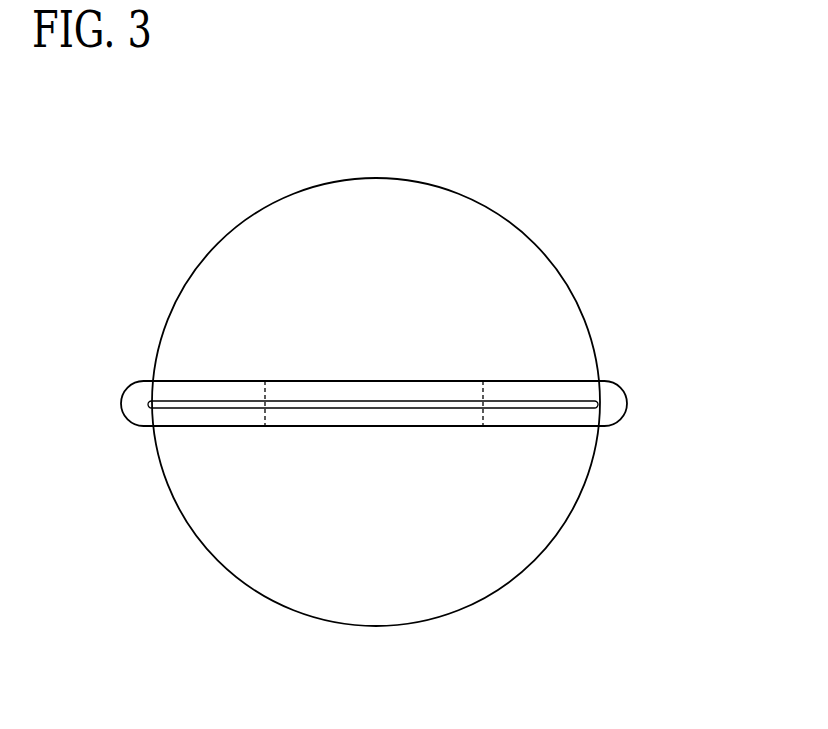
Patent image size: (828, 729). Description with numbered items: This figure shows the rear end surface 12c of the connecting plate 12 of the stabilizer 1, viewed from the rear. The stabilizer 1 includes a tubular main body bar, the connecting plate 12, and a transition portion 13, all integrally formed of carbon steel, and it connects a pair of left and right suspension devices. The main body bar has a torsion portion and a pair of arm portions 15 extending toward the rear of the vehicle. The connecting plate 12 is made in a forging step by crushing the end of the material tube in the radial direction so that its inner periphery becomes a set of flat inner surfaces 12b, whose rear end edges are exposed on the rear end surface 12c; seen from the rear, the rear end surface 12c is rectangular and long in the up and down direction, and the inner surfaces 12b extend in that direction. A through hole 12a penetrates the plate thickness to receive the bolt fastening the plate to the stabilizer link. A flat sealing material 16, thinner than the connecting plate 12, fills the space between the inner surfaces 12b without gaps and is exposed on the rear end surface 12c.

The stabilizer 1 is at (632, 173).
The connecting plate 12 is at (610, 375).
The through hole 12a is at (265, 417).
The flat inner surfaces 12b is at (200, 404).
The rear end surface 12c is at (377, 420).
The transition portion 13 is at (483, 248).
The arm portions 15 is at (375, 177).
The sealing material 16 is at (598, 404).